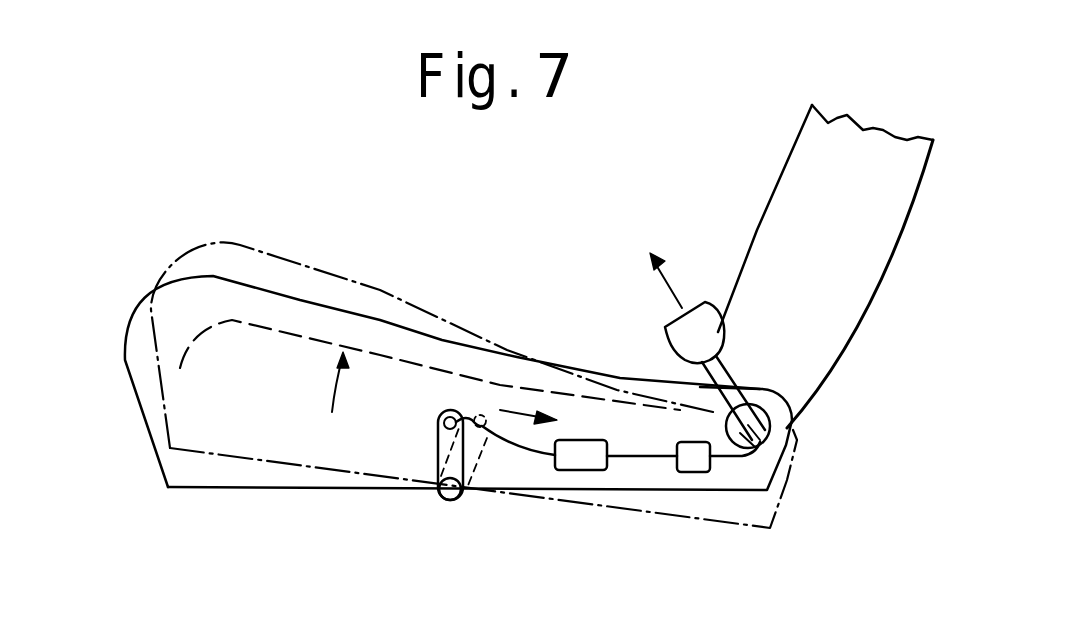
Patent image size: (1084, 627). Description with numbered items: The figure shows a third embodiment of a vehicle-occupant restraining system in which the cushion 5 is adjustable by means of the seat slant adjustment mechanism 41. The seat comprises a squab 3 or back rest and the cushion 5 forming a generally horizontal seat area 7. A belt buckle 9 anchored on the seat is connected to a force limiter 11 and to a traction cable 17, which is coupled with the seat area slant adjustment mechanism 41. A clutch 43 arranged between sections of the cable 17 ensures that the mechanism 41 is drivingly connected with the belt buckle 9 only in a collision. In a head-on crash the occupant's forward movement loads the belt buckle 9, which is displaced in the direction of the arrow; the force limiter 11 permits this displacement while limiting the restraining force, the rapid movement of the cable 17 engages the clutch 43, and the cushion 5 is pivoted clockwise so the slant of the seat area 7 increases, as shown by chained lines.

The squab 3 is at (827, 266).
The cushion 5 is at (440, 383).
The seat area 7 is at (474, 348).
The belt buckle 9 is at (710, 334).
The force limiter 11 is at (702, 508).
The traction cable 17 is at (608, 493).
The seat area slant adjustment mechanism 41 is at (421, 479).
The clutch 43 is at (560, 497).